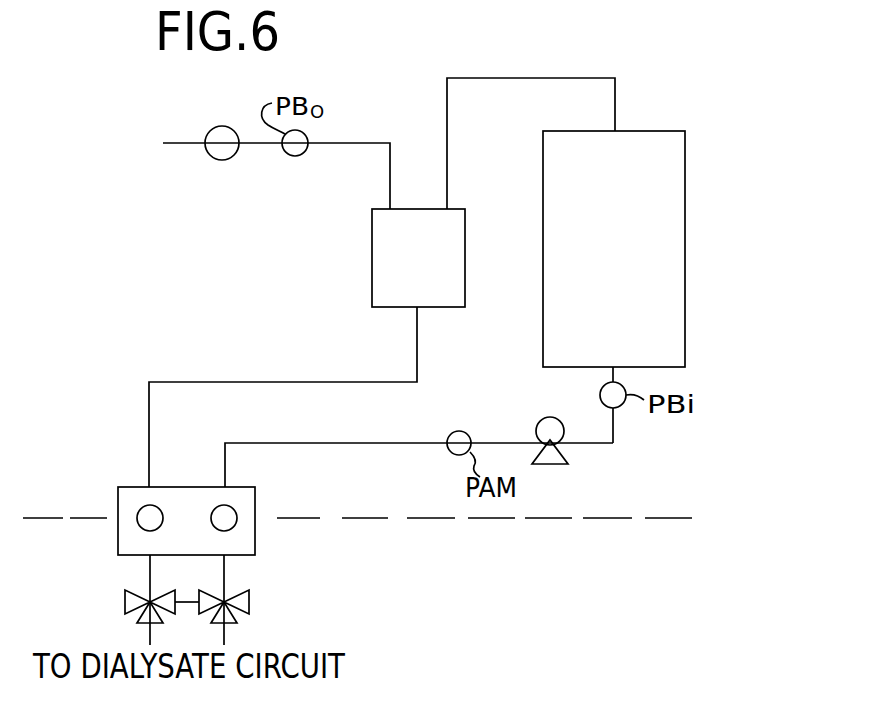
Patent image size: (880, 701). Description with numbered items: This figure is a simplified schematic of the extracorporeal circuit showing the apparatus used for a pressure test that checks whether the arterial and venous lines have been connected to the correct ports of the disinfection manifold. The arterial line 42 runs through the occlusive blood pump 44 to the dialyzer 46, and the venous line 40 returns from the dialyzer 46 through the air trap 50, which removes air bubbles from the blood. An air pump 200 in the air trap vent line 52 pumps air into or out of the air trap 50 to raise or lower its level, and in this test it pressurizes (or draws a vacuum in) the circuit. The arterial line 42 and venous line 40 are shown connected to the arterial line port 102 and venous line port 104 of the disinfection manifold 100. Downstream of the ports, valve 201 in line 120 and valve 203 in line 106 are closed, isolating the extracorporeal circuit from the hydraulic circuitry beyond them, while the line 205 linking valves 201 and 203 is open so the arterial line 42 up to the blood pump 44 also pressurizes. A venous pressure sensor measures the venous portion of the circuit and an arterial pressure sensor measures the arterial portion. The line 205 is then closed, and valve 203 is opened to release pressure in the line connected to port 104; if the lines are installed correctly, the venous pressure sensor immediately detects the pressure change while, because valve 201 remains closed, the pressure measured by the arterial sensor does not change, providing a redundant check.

The air pump 200 is at (224, 124).
The air trap vent line 52 is at (366, 143).
The air trap 50 is at (372, 258).
The dialyzer 46 is at (685, 243).
The venous line 40 is at (304, 381).
The arterial line 42 is at (327, 443).
The blood pump 44 is at (568, 455).
The disinfection manifold 100 is at (255, 546).
The arterial line port 102 is at (237, 512).
The venous line port 104 is at (138, 505).
The line 106 is at (150, 568).
The line 120 is at (224, 575).
The valve 203 is at (140, 605).
The valve 201 is at (250, 608).
The line 205 is at (190, 602).